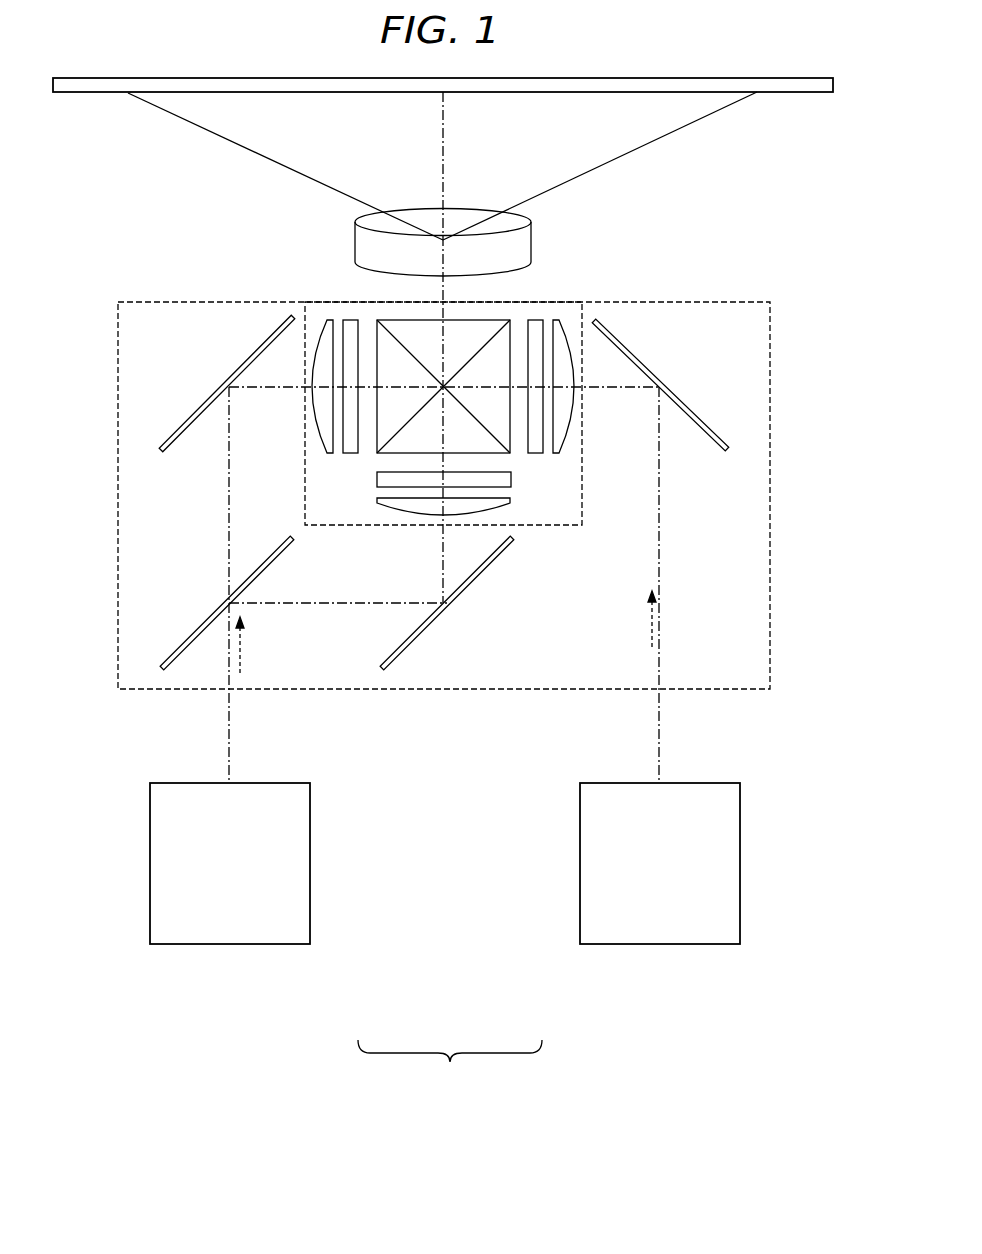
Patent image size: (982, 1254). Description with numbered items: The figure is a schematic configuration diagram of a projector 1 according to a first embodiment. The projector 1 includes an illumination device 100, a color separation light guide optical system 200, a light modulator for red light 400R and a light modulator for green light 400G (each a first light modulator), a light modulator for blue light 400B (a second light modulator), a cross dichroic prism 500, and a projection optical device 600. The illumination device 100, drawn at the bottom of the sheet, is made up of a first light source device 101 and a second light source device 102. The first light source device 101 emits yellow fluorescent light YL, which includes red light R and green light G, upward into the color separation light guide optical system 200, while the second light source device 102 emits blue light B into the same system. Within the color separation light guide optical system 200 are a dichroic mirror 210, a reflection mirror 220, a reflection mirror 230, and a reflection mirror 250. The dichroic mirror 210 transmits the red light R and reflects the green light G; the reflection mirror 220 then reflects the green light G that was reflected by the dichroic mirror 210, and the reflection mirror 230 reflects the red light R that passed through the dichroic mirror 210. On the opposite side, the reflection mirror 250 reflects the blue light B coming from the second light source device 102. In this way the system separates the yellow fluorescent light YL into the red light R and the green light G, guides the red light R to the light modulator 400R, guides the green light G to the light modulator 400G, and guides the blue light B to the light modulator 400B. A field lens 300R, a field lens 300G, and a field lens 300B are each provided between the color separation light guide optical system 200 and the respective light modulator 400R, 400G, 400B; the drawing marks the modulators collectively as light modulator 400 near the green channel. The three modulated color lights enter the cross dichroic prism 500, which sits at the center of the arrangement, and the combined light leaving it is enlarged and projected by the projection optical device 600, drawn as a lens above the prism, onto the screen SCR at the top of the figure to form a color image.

The projector 1 is at (780, 272).
The illumination device 100 is at (450, 1070).
The first light source device 101 is at (293, 946).
The second light source device 102 is at (598, 946).
The color separation light guide optical system 200 is at (118, 441).
The dichroic mirror 210 is at (195, 636).
The reflection mirror 220 is at (424, 630).
The reflection mirror 230 is at (207, 405).
The reflection mirror 250 is at (692, 409).
The field lens 300R is at (325, 318).
The field lens 300G is at (383, 508).
The field lens 300B is at (558, 318).
The light modulator 400 is at (538, 484).
The light modulator for red light 400R is at (350, 318).
The light modulator for green light 400G is at (385, 480).
The light modulator for blue light 400B is at (535, 318).
The cross dichroic prism 500 is at (455, 326).
The projection optical device 600 is at (430, 214).
The screen SCR is at (802, 93).
The yellow fluorescent light YL is at (242, 655).
The red light R is at (228, 545).
The green light G is at (297, 604).
The blue light B is at (650, 613).